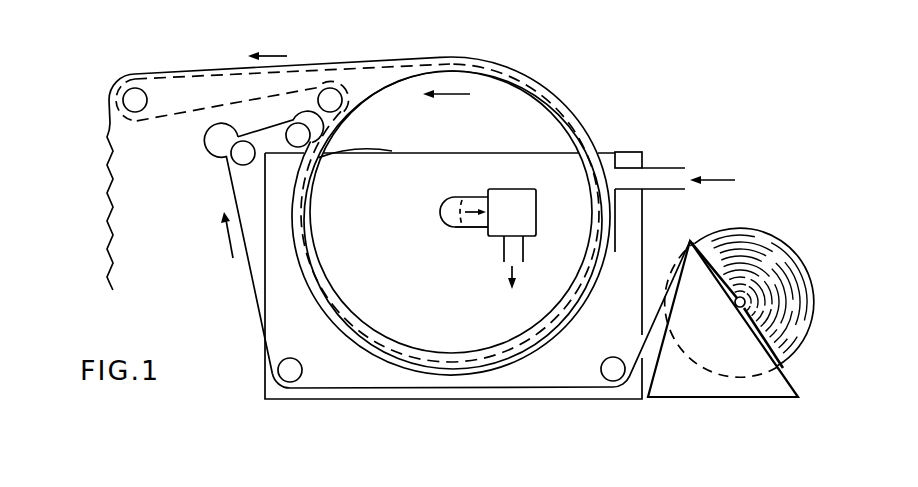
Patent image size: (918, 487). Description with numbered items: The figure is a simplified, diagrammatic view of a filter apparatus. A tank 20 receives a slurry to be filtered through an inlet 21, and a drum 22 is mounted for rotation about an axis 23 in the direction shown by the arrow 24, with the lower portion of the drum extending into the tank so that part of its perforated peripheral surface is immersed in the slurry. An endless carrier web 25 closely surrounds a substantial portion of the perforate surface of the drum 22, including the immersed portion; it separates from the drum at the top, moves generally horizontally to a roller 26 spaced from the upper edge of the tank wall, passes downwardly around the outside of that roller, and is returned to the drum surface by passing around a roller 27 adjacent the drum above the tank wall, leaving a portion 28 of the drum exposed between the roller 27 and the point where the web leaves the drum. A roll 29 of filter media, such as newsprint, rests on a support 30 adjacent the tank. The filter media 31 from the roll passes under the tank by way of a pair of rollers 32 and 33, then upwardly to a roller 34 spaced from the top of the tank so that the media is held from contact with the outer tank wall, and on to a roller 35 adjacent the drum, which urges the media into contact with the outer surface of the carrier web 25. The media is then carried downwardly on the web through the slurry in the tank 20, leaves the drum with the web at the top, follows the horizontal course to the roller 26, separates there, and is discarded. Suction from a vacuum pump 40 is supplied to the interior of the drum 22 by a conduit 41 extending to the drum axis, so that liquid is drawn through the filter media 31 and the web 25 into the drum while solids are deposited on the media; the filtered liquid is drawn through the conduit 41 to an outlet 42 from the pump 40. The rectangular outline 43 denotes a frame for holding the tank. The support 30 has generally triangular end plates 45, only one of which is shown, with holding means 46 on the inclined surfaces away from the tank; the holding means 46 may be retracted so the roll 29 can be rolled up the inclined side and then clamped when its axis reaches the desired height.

The tank 20 is at (573, 320).
The inlet 21 is at (660, 167).
The drum 22 is at (530, 94).
The axis 23 is at (445, 202).
The arrow 24 is at (445, 94).
The endless carrier web 25 is at (187, 114).
The roller 26 is at (137, 90).
The roller 27 is at (324, 89).
The exposed portion of the drum 28 is at (377, 95).
The roll of filter media 29 is at (807, 282).
The support 30 is at (712, 398).
The filter media 31 is at (110, 153).
The roller 32 is at (613, 381).
The roller 33 is at (289, 382).
The roller 34 is at (239, 158).
The roller 35 is at (293, 133).
The vacuum pump 40 is at (518, 189).
The conduit 41 is at (468, 228).
The outlet 42 is at (502, 258).
The rectangular outline 43 is at (382, 399).
The end plates 45 is at (757, 388).
The holding means 46 is at (750, 308).